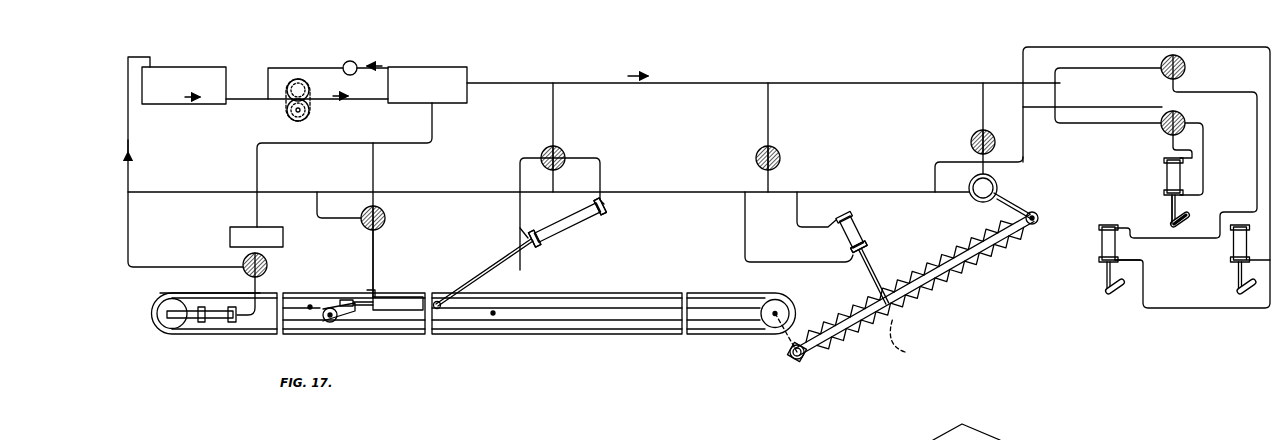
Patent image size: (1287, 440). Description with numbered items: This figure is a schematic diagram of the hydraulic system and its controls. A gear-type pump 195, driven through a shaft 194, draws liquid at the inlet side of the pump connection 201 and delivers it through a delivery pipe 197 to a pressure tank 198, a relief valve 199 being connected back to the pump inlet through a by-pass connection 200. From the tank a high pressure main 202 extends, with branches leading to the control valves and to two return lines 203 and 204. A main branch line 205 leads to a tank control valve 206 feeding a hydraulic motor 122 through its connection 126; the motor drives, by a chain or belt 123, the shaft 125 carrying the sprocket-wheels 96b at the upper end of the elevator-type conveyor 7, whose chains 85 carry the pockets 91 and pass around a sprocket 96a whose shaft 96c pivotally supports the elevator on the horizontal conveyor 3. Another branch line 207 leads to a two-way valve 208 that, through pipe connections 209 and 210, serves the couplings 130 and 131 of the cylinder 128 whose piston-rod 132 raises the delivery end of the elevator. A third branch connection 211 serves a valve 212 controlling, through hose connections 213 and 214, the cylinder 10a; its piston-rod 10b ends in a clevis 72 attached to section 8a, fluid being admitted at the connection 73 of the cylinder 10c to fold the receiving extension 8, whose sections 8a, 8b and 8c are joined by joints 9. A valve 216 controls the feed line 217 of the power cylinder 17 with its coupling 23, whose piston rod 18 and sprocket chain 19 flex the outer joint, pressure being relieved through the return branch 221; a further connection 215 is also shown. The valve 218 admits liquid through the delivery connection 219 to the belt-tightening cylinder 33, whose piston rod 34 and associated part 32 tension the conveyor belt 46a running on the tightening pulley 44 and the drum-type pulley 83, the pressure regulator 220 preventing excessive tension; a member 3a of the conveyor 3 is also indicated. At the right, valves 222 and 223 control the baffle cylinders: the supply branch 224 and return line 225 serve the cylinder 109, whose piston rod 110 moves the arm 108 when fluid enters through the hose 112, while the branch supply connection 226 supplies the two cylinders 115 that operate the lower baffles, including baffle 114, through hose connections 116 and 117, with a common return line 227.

The horizontal conveyor 3 is at (602, 334).
The boom rod 3a is at (592, 308).
The elevator-type conveyor 7 is at (952, 291).
The receiving extension 8 is at (180, 337).
The innermost conveyor section 8a is at (462, 320).
The conveyor section 8b is at (405, 320).
The outermost conveyor section 8c is at (292, 320).
The joint 9 is at (329, 323).
The retractable link 10a is at (590, 231).
The piston-rod 10b is at (484, 276).
The cylinder 10c is at (557, 225).
The power cylinder 17 is at (400, 296).
The piston rod 18 is at (352, 313).
The sprocket chain 19 is at (322, 293).
The coupling 23 is at (367, 290).
The piston 32 is at (238, 322).
The belt tightener cylinder 33 is at (215, 322).
The piston rod 34 is at (190, 295).
The tightening pulley 44 is at (160, 330).
The conveyor belt 46a is at (540, 293).
The clevis 72 is at (438, 301).
The connection 73 is at (528, 240).
The drum-type pulley 83 is at (786, 295).
The endless chains 85 is at (907, 339).
The pockets 91 is at (925, 246).
The sprocket 96a is at (790, 359).
The sprocket-wheel 96b is at (1038, 232).
The shaft 96c is at (801, 360).
The arm 108 is at (1186, 232).
The fluid operated cylinder 109 is at (1164, 172).
The piston rod 110 is at (1170, 210).
The hose 112 is at (1204, 194).
The baffle 114 is at (1247, 231).
The fluid operated cylinders 115 is at (1100, 247).
The hose connection 116 is at (1118, 260).
The hose connection 117 is at (1118, 226).
The hydraulic motor 122 is at (995, 180).
The belt 123 is at (1010, 198).
The shaft 125 is at (1039, 215).
The connection 126 is at (975, 172).
The fluid-operated cylinder 128 is at (855, 226).
The coupling 130 is at (828, 228).
The coupling 131 is at (858, 257).
The piston-rod 132 is at (873, 260).
The shaft 194 is at (300, 122).
The pump 195 is at (312, 110).
The delivery pipe 197 is at (378, 103).
The pressure tank 198 is at (467, 67).
The relief valve 199 is at (357, 62).
The by-pass connection 200 is at (325, 68).
The pump connection 201 is at (287, 102).
The high pressure main 202 is at (737, 82).
The return line 203 is at (225, 191).
The return line 204 is at (140, 266).
The main branch line 205 is at (982, 101).
The tank control valve 206 is at (176, 105).
The branch line 207 is at (769, 113).
The two-way valve 208 is at (781, 152).
The pipe connection 209 is at (798, 204).
The pipe connection 210 is at (744, 223).
The branch connection 211 is at (552, 113).
The two-way valve 212 is at (564, 152).
The hose connection 213 is at (519, 208).
The hose connection 214 is at (311, 146).
The line 215 is at (374, 178).
The valve 216 is at (386, 214).
The feed line 217 is at (374, 245).
The valve 218 is at (267, 263).
The delivery connection 219 is at (229, 295).
The pressure regulator 220 is at (266, 227).
The return branch 221 is at (330, 220).
The control valve 222 is at (1187, 118).
The control valve 223 is at (1187, 60).
The supply branch 224 is at (1077, 107).
The return line 225 is at (1100, 125).
The branch supply connection 226 is at (1256, 139).
The common return line 227 is at (1269, 171).